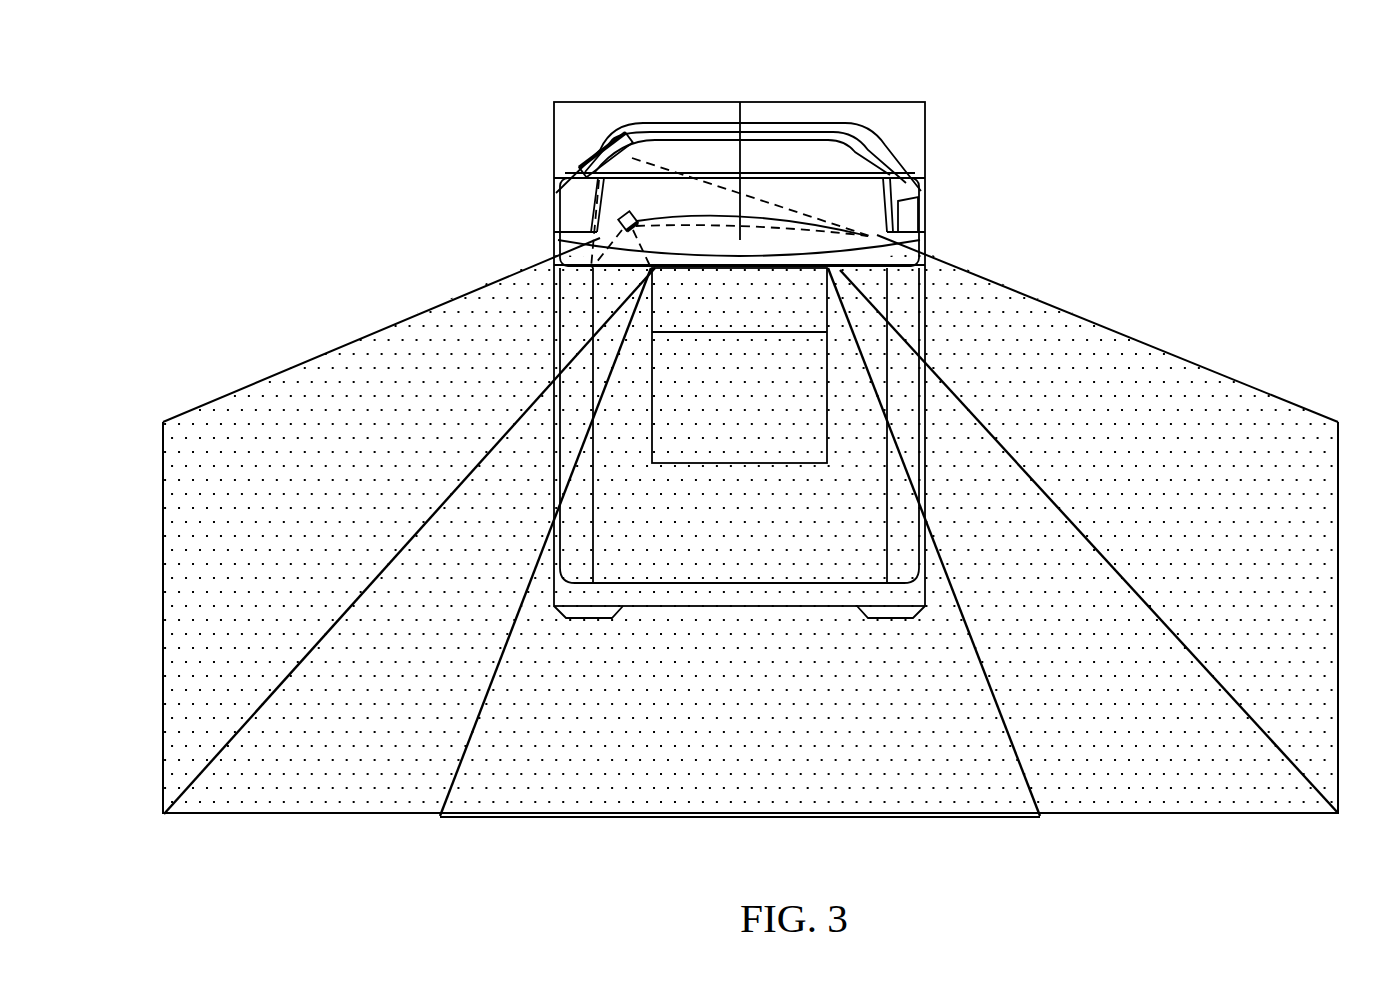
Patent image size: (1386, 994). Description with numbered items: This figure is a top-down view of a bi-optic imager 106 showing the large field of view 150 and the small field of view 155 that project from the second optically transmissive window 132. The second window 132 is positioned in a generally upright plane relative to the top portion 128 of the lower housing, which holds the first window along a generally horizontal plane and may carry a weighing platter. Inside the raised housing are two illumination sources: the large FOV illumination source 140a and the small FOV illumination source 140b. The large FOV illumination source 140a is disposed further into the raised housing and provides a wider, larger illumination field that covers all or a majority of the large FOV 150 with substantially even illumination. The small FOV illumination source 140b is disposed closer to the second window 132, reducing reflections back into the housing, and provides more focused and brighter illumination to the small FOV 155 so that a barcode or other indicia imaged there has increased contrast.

The bi-optic imager 106 is at (461, 57).
The large FOV illumination source 140a is at (582, 165).
The small FOV illumination source 140b is at (618, 214).
The top portion 128 is at (592, 340).
The second optically transmissive window 132 is at (853, 272).
The large FOV 150 is at (1191, 362).
The small FOV 155 is at (1022, 766).